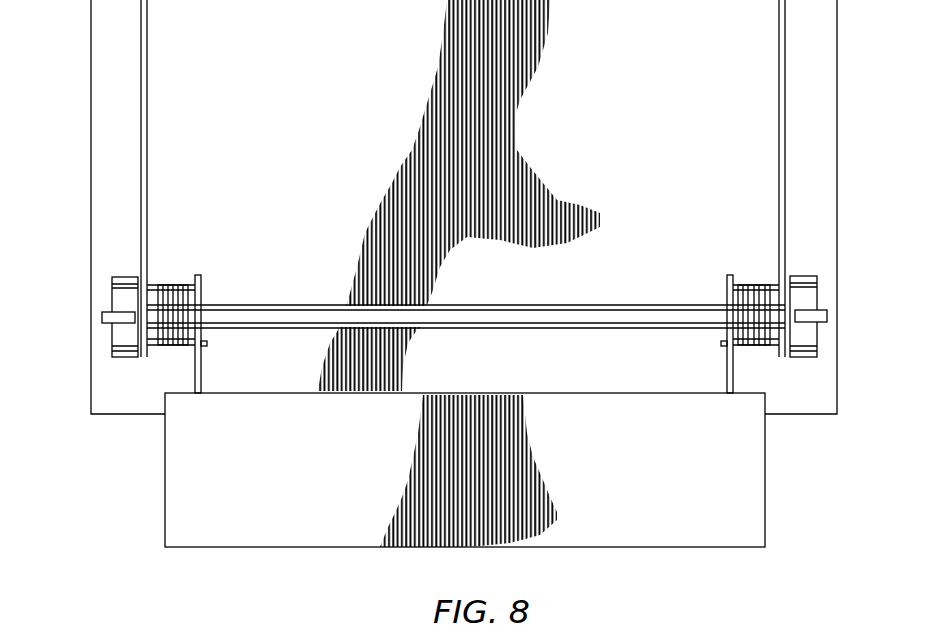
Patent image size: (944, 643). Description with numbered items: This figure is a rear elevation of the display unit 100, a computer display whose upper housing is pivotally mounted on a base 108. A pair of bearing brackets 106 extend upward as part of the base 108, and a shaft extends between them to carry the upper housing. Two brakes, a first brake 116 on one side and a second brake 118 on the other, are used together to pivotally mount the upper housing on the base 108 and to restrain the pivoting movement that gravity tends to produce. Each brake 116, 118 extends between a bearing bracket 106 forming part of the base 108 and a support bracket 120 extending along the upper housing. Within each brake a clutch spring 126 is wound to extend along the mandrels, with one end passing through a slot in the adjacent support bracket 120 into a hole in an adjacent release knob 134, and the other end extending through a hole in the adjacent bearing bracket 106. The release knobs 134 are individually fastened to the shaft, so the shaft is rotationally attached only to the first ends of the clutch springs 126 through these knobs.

The display unit 100 is at (100, 461).
The bearing bracket 106 is at (203, 380).
The base 108 is at (165, 508).
The first brake 116 is at (172, 252).
The second brake 118 is at (757, 252).
The support bracket 120 is at (141, 218).
The clutch spring 126 is at (183, 285).
The release knob 134 is at (112, 340).